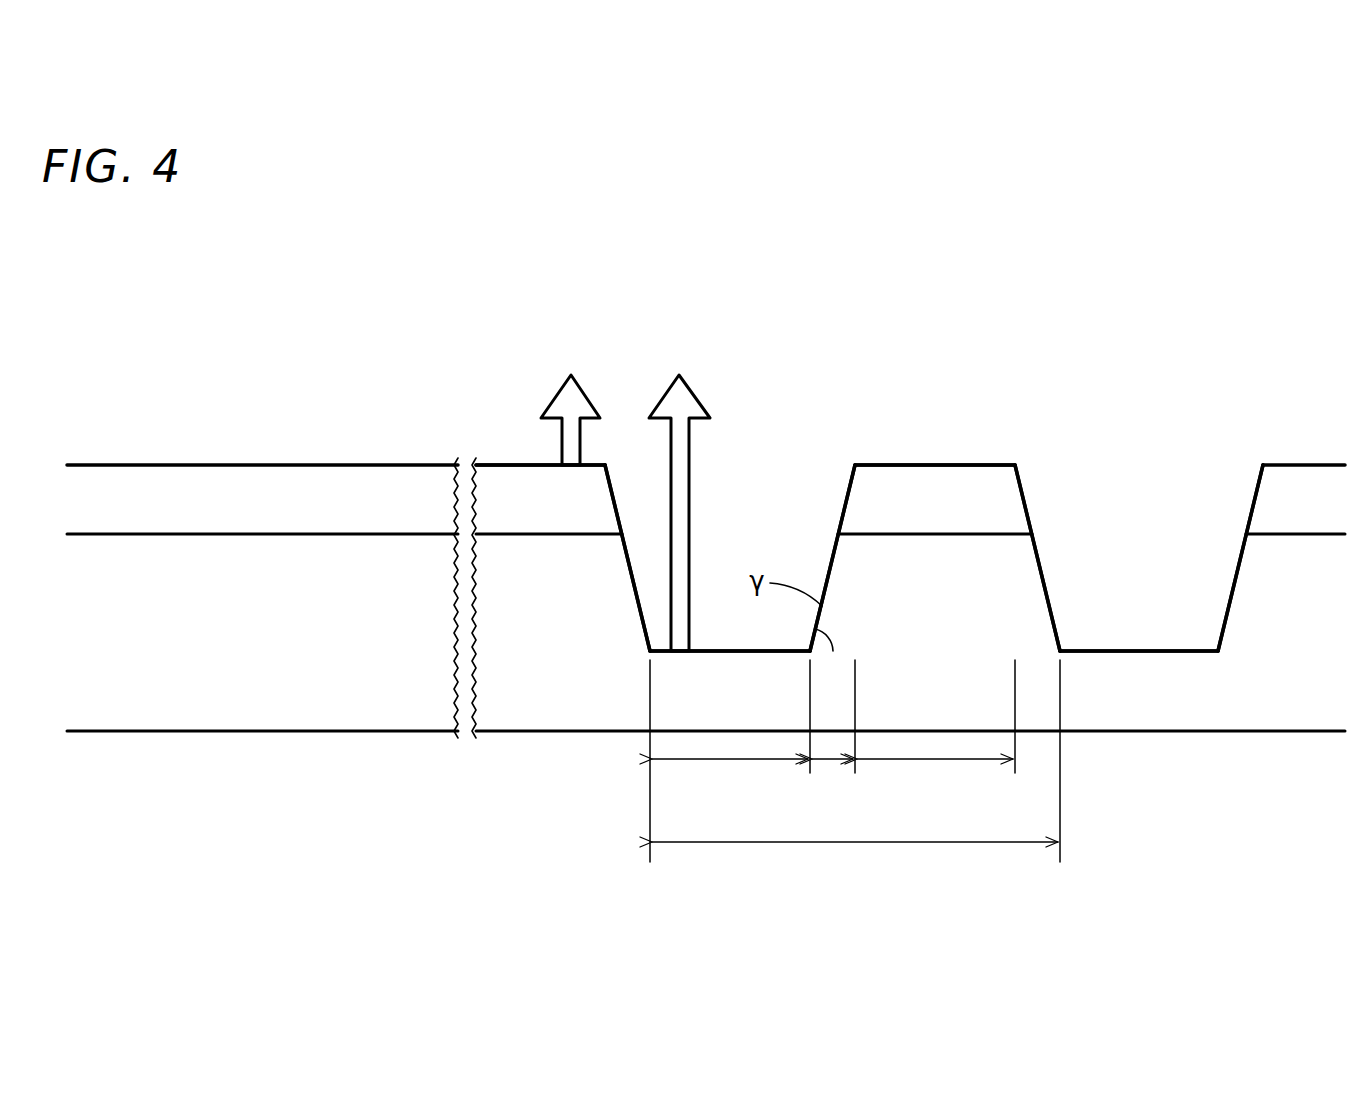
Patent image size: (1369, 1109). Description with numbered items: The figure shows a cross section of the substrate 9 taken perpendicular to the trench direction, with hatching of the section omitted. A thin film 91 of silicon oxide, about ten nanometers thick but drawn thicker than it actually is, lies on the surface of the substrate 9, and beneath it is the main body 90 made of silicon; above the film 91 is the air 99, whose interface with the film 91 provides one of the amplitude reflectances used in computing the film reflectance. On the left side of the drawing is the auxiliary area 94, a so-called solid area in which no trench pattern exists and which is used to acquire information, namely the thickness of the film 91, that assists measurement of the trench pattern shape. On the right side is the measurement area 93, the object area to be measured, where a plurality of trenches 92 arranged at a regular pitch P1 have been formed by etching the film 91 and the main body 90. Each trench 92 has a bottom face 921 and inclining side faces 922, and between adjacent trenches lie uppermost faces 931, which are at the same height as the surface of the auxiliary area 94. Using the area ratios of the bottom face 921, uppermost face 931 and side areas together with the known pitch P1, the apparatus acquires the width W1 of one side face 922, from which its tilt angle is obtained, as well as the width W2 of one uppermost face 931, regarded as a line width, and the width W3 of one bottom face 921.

The substrate 9 is at (556, 787).
The main body 90 is at (385, 710).
The thin film 91 is at (372, 487).
The trench 92 is at (763, 462).
The bottom face 921 is at (705, 651).
The side face 922 is at (616, 492).
The measurement area 93 is at (1012, 355).
The uppermost face 931 is at (518, 465).
The auxiliary area 94 is at (253, 366).
The air 99 is at (164, 395).
The width of one side face W1 is at (830, 760).
The width of one uppermost face W2 is at (933, 760).
The width of one bottom face W3 is at (730, 760).
The pitch P1 is at (855, 843).